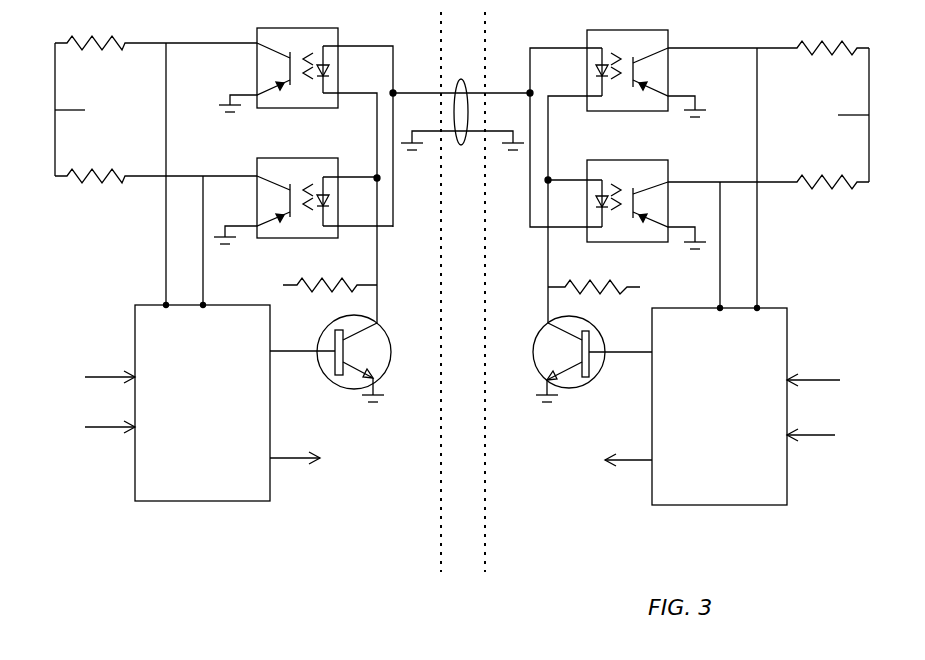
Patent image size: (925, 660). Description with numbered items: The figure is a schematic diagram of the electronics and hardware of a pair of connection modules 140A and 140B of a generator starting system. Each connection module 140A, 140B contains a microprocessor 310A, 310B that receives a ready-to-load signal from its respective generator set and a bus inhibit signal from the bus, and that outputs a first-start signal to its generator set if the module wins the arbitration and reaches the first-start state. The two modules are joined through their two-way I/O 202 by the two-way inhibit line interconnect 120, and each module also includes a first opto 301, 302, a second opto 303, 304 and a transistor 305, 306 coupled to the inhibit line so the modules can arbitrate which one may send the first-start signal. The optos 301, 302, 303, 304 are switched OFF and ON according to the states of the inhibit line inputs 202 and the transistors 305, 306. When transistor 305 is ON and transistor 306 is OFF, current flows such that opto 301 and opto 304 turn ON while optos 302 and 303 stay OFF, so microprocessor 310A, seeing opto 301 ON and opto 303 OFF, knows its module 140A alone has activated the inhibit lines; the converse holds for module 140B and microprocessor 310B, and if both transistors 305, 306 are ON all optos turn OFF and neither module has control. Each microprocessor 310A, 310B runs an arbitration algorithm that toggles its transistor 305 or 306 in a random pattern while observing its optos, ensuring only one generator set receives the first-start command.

The inhibit line interconnect 120 is at (470, 93).
The two-way I/O 202 is at (393, 93).
The connection module 140A is at (205, 277).
The connection module 140B is at (712, 308).
The first opto 301 is at (306, 175).
The first opto 302 is at (646, 80).
The second opto 303 is at (303, 206).
The second opto 304 is at (646, 209).
The transistor 305 is at (330, 359).
The transistor 306 is at (592, 359).
The microprocessor 310A is at (246, 471).
The microprocessor 310B is at (712, 470).